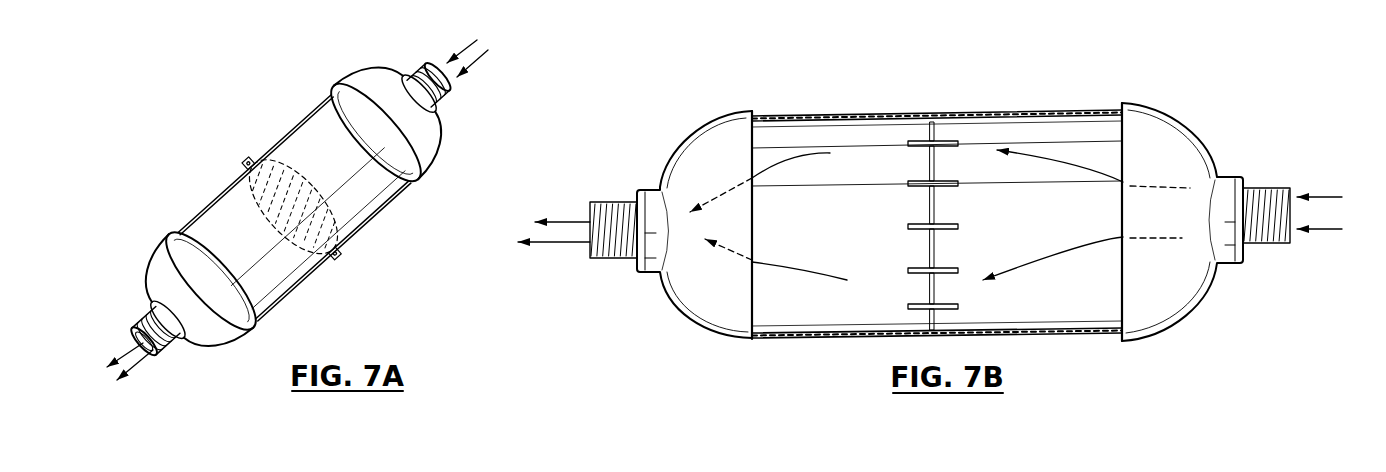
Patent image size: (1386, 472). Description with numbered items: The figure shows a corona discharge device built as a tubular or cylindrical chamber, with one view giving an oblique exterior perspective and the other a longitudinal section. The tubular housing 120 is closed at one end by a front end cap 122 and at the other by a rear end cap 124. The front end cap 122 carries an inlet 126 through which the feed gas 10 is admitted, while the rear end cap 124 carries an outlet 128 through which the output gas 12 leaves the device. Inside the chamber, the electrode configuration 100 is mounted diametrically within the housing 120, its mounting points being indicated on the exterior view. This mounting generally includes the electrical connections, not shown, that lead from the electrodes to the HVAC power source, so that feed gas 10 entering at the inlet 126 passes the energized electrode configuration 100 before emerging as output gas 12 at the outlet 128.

In FIG. 7A, the feed gas 10 is at (478, 60).
In FIG. 7B, the feed gas 10 is at (1373, 270).
In FIG. 7A, the output gas 12 is at (123, 344).
In FIG. 7B, the output gas 12 is at (560, 243).
In FIG. 7B, the electrode configuration 100 is at (906, 134).
In FIG. 7B, the tubular housing 120 is at (1044, 112).
In FIG. 7B, the front end cap 122 is at (1173, 111).
In FIG. 7B, the rear end cap 124 is at (703, 120).
In FIG. 7B, the inlet 126 is at (1237, 170).
In FIG. 7B, the outlet 128 is at (638, 189).